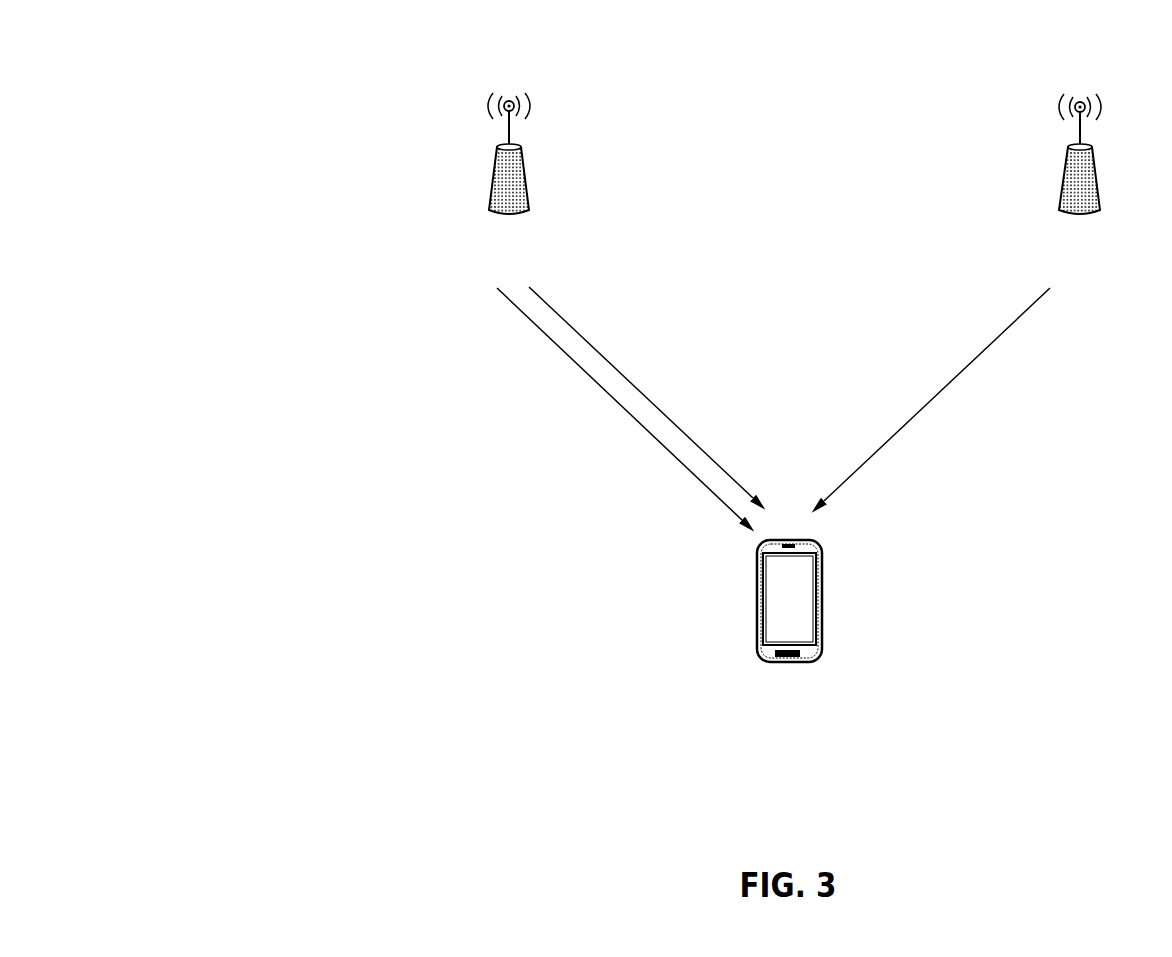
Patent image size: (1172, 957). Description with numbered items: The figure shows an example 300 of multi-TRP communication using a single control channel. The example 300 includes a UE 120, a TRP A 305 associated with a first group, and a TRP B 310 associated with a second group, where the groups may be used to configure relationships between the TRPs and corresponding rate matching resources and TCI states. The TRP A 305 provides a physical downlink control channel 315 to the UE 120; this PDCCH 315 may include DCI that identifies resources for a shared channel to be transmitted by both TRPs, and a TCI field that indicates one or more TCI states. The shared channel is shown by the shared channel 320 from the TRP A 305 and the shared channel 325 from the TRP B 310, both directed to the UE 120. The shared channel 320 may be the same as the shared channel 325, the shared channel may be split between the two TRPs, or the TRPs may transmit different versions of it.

The example of multi-TRP communication using a single control channel 300 is at (277, 51).
The TRP A 305 is at (525, 247).
The TRP B 310 is at (1096, 247).
The physical downlink control channel (PDCCH) 315 is at (663, 369).
The shared channel from TRP A 320 is at (517, 387).
The shared channel from TRP B 325 is at (990, 396).
The UE 120 is at (768, 731).